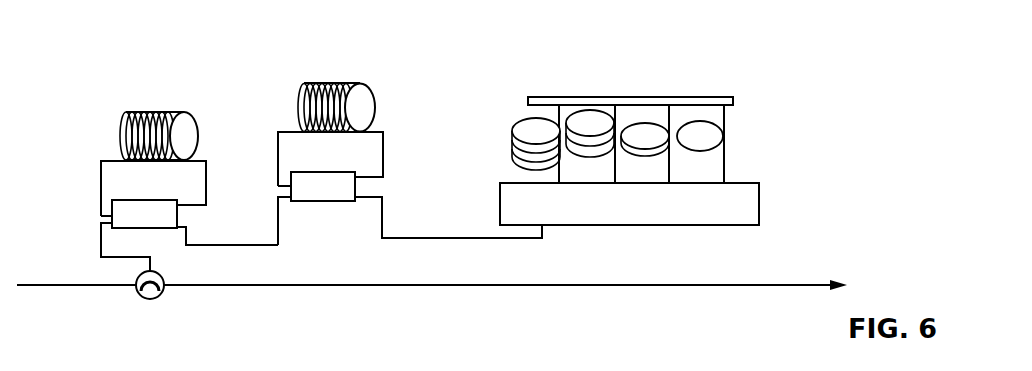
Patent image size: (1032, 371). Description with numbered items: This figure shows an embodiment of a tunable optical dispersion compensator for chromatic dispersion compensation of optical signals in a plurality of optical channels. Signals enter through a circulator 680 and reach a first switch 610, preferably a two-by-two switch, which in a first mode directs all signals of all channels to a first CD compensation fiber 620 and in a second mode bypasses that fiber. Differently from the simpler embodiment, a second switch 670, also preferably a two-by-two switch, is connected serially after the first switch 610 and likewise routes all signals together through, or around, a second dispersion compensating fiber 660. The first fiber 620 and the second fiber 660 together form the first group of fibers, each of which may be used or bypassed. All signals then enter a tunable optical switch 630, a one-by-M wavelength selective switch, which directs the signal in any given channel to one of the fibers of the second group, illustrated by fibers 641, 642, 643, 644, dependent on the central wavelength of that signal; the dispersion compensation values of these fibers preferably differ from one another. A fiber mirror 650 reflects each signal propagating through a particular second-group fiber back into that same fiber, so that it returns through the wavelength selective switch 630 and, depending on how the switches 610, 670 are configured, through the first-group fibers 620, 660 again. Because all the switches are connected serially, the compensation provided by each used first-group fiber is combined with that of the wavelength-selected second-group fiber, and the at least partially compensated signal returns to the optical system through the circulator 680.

The first switch 610 is at (163, 228).
The first CD compensation fiber 620 is at (121, 116).
The tunable optical switch 630 is at (723, 225).
The optical fiber of the second group 641 is at (518, 124).
The optical fiber of the second group 642 is at (571, 117).
The optical fiber of the second group 643 is at (637, 123).
The optical fiber of the second group 644 is at (697, 121).
The fiber mirror 650 is at (728, 97).
The second fiber 660 is at (300, 90).
The second switch 670 is at (313, 201).
The circulator 680 is at (153, 300).